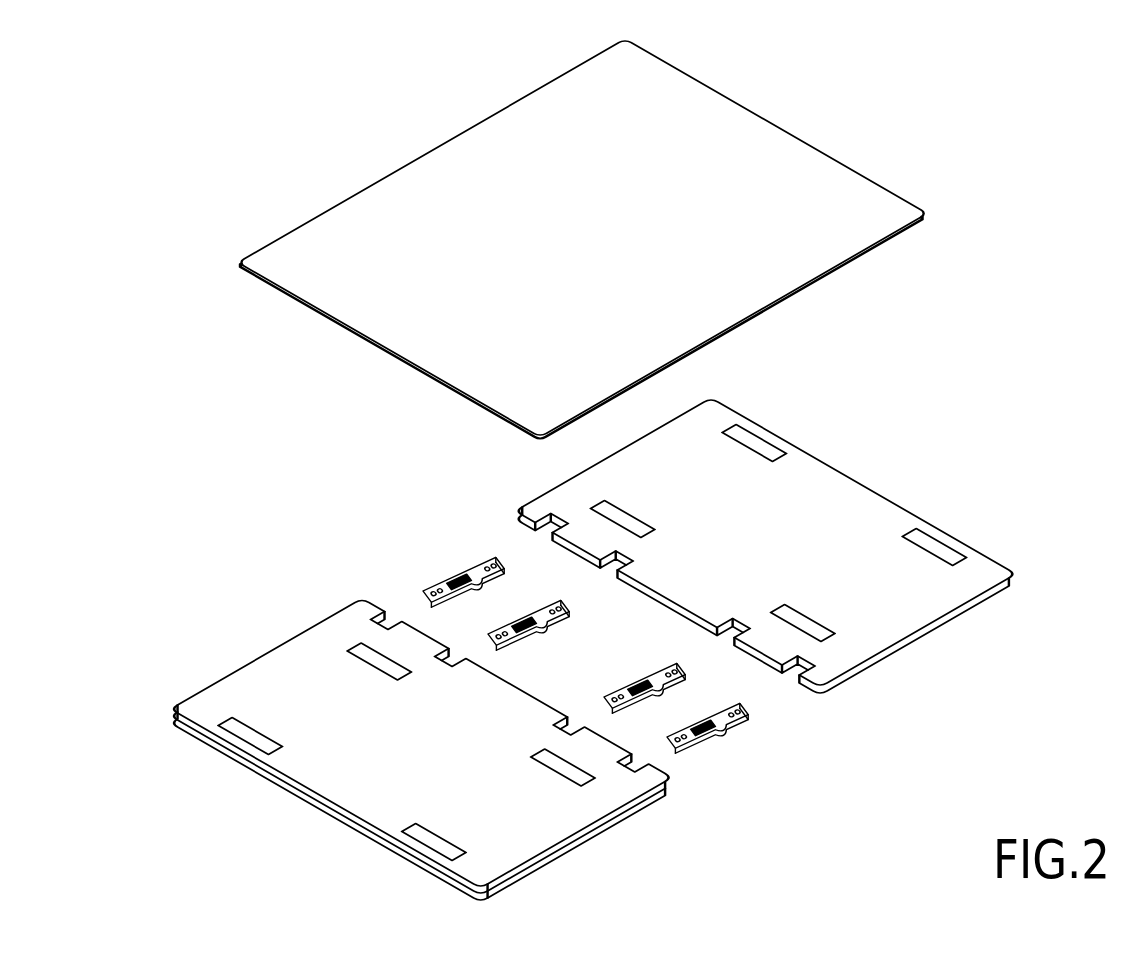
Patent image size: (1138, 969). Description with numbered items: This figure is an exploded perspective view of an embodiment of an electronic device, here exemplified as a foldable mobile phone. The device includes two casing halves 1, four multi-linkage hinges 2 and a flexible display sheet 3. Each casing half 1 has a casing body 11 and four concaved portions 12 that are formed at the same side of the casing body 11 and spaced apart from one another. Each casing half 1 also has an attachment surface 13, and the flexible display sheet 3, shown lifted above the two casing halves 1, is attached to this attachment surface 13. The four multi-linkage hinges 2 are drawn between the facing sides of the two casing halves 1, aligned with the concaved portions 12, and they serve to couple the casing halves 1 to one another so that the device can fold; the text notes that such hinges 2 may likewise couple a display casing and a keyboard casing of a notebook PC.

The casing half 1 is at (937, 651).
The casing body 11 is at (953, 618).
The concaved portion 12 is at (390, 617).
The attachment surface 13 is at (297, 672).
The multi-linkage hinge 2 is at (505, 565).
The flexible display sheet 3 is at (778, 170).